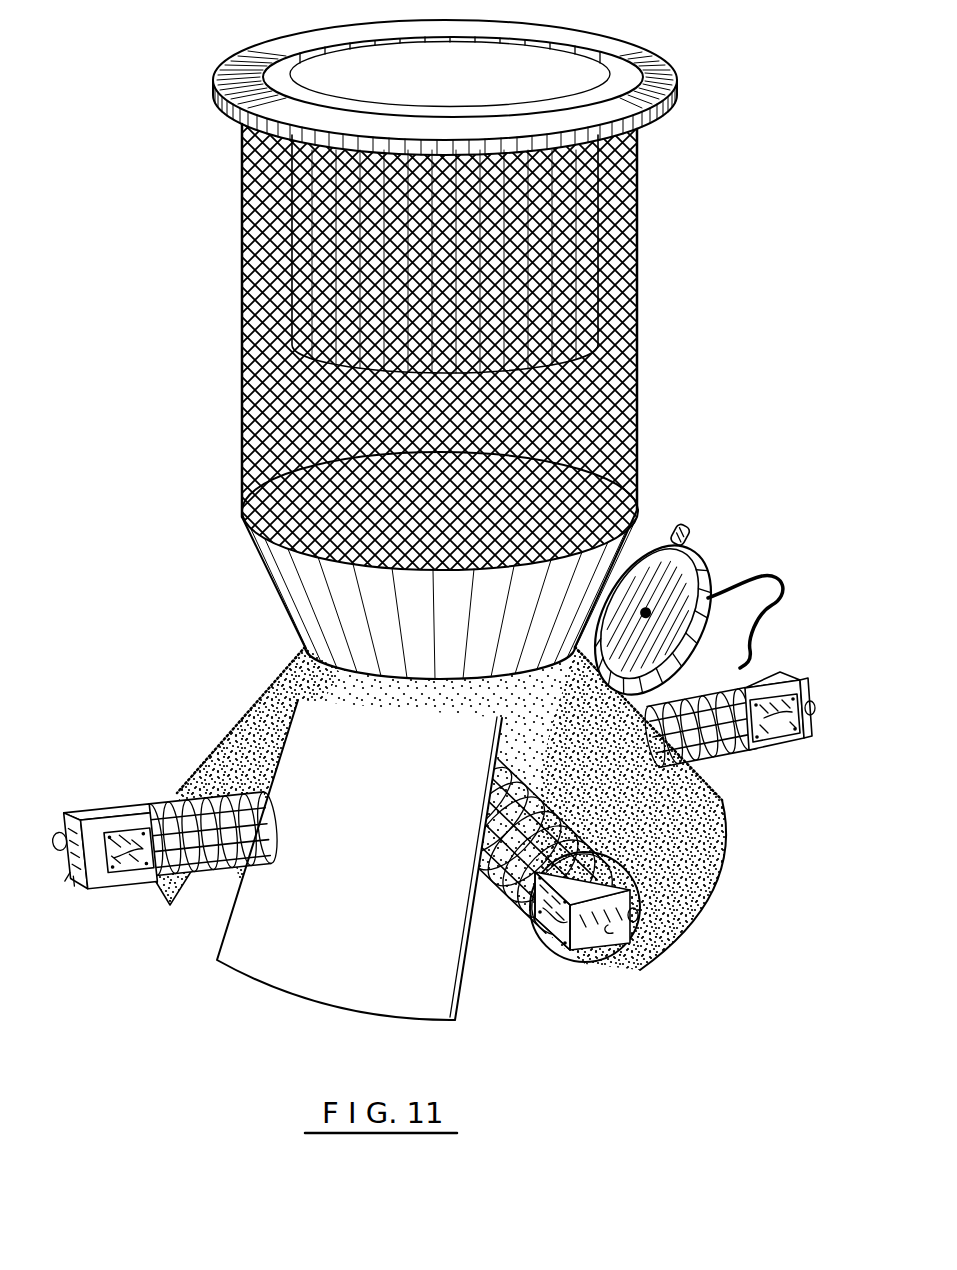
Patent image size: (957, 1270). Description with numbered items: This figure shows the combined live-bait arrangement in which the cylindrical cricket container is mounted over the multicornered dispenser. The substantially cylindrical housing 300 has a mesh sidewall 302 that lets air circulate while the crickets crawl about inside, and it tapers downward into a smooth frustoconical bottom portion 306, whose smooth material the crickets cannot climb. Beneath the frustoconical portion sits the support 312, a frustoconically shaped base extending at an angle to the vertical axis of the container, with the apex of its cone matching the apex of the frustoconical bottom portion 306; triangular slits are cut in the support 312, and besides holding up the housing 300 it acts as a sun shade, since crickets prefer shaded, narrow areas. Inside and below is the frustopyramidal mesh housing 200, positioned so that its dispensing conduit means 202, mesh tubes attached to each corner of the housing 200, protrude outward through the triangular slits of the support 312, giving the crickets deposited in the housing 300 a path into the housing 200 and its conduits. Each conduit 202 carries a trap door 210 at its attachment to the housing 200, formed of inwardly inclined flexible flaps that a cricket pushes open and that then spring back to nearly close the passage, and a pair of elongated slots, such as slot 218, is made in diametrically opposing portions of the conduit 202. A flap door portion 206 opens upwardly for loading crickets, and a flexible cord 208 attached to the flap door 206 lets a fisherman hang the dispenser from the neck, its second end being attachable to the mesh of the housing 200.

The housing 200 is at (757, 672).
The dispensing conduit means 202 is at (712, 766).
The flap door portion 206 is at (700, 560).
The flexible cord 208 is at (738, 578).
The trap door 210 is at (540, 879).
The elongated slot 218 is at (600, 958).
The cylindrical housing 300 is at (453, 295).
The mesh sidewall 302 is at (243, 372).
The frustoconical bottom portion 306 is at (286, 605).
The support 312 is at (378, 876).